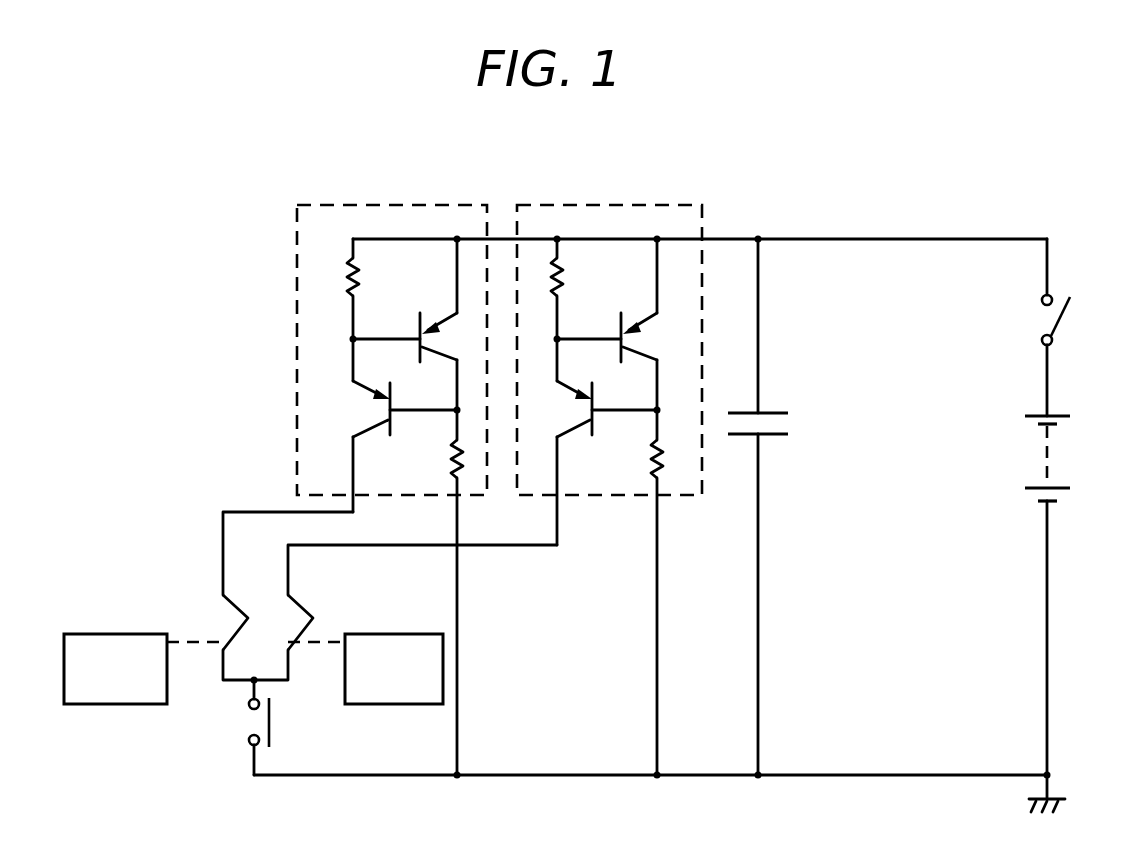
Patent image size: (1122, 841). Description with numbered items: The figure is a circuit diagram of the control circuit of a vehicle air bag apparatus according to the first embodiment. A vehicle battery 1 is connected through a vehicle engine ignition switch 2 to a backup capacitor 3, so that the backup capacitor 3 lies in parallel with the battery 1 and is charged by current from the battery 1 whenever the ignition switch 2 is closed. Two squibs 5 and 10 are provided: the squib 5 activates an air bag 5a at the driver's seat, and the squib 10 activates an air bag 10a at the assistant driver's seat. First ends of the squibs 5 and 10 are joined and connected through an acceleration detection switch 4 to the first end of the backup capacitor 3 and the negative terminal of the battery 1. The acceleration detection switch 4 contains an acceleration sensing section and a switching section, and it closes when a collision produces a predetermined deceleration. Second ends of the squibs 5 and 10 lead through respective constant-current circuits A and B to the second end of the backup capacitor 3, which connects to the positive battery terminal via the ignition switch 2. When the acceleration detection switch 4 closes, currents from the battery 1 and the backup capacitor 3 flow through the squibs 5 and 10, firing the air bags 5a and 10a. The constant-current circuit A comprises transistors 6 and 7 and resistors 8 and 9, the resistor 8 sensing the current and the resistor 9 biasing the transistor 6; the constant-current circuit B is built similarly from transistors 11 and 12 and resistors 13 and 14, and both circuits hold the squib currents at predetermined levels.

The vehicle battery 1 is at (1060, 414).
The vehicle engine ignition switch 2 is at (1060, 321).
The backup capacitor 3 is at (781, 411).
The acceleration detection switch 4 is at (276, 712).
The squib 5 is at (222, 601).
The air bag 5a is at (111, 632).
The transistor 6 is at (365, 395).
The transistor 7 is at (447, 358).
The resistor 8 is at (359, 278).
The resistor 9 is at (449, 461).
The squib 10 is at (303, 600).
The air bag 10a is at (390, 631).
The transistor 11 is at (570, 394).
The transistor 12 is at (647, 358).
The resistor 13 is at (564, 278).
The resistor 14 is at (645, 458).
The constant-current circuit A is at (430, 204).
The constant-current circuit B is at (645, 204).